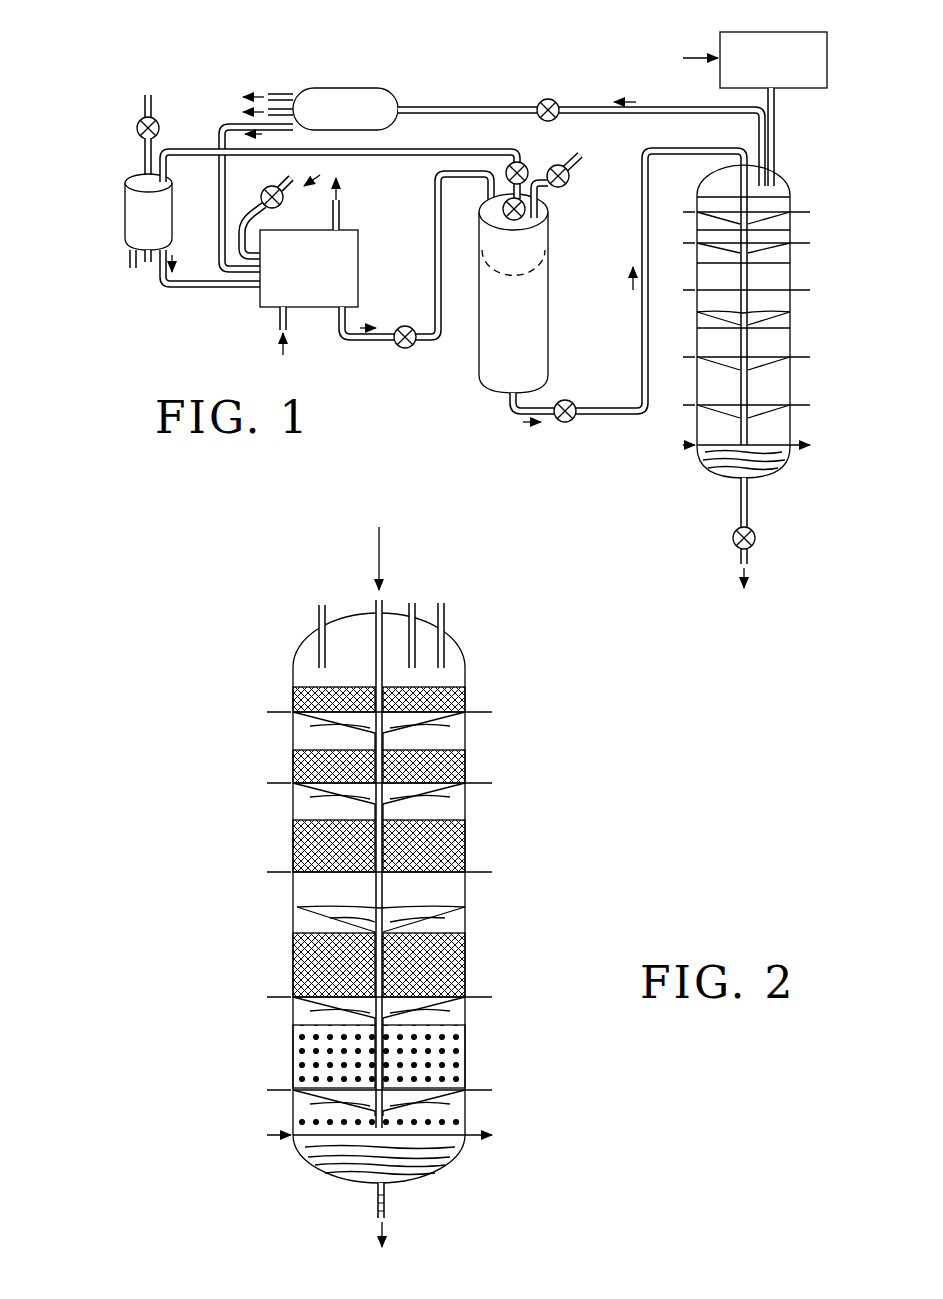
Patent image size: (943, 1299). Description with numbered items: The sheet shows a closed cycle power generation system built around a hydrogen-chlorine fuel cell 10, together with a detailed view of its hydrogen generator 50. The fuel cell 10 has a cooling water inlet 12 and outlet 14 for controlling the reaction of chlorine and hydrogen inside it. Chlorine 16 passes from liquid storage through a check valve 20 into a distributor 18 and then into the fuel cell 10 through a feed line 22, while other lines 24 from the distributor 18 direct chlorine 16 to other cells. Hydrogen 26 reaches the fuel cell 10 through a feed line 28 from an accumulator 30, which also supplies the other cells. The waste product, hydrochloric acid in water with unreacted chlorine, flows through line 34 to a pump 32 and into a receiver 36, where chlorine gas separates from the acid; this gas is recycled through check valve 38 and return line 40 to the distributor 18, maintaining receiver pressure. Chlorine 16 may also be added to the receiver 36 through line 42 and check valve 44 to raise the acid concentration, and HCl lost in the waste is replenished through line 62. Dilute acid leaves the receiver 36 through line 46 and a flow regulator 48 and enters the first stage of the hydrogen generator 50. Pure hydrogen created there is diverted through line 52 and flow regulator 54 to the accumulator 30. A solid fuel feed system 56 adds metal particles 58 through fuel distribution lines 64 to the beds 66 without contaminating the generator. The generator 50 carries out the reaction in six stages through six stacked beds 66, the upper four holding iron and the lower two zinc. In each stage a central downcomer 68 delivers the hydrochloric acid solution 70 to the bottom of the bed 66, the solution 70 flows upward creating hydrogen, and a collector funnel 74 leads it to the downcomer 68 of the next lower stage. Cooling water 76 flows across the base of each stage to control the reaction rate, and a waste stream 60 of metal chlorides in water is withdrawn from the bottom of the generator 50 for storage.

In FIG. 1, the hydrogen-chlorine fuel cell 10 is at (359, 275).
In FIG. 1, the cooling water inlet 12 is at (280, 318).
In FIG. 1, the cooling water outlet 14 is at (341, 211).
In FIG. 1, the chlorine 16 is at (148, 84).
In FIG. 1, the distributor 18 is at (126, 208).
In FIG. 1, the check valve 20 is at (136, 126).
In FIG. 1, the feed line 22 is at (190, 290).
In FIG. 1, the other lines 24 is at (131, 266).
In FIG. 1, the hydrogen 26 is at (248, 112).
In FIG. 2, the hydrogen 26 is at (412, 590).
In FIG. 1, the feed line 28 is at (229, 172).
In FIG. 1, the accumulator 30 is at (340, 88).
In FIG. 1, the pump 32 is at (404, 349).
In FIG. 1, the line 34 is at (342, 338).
In FIG. 1, the receiver 36 is at (548, 322).
In FIG. 1, the check valve 38 is at (524, 164).
In FIG. 1, the return line 40 is at (428, 151).
In FIG. 1, the line 42 is at (549, 210).
In FIG. 1, the check valve 44 is at (570, 182).
In FIG. 1, the line 46 is at (614, 417).
In FIG. 2, the line 46 is at (374, 606).
In FIG. 1, the flow regulator 48 is at (560, 423).
In FIG. 1, the hydrogen generator 50 is at (770, 321).
In FIG. 2, the hydrogen generator 50 is at (550, 750).
In FIG. 1, the line 52 is at (646, 104).
In FIG. 1, the flow regulator 54 is at (548, 98).
In FIG. 1, the solid fuel feed system 56 is at (808, 27).
In FIG. 1, the metal particles 58 is at (702, 58).
In FIG. 2, the metal particles 58 is at (323, 590).
In FIG. 1, the waste stream 60 is at (740, 577).
In FIG. 2, the waste stream 60 is at (385, 1230).
In FIG. 1, the line 62 is at (540, 228).
In FIG. 1, the fuel distribution lines 64 is at (778, 132).
In FIG. 2, the fuel distribution lines 64 is at (447, 618).
In FIG. 2, the reaction beds 66 is at (465, 700).
In FIG. 2, the downcomer 68 is at (375, 657).
In FIG. 2, the hydrochloric acid solution 70 is at (376, 542).
In FIG. 2, the collector funnel 74 is at (345, 723).
In FIG. 1, the cooling water 76 is at (798, 243).
In FIG. 2, the cooling water 76 is at (268, 712).